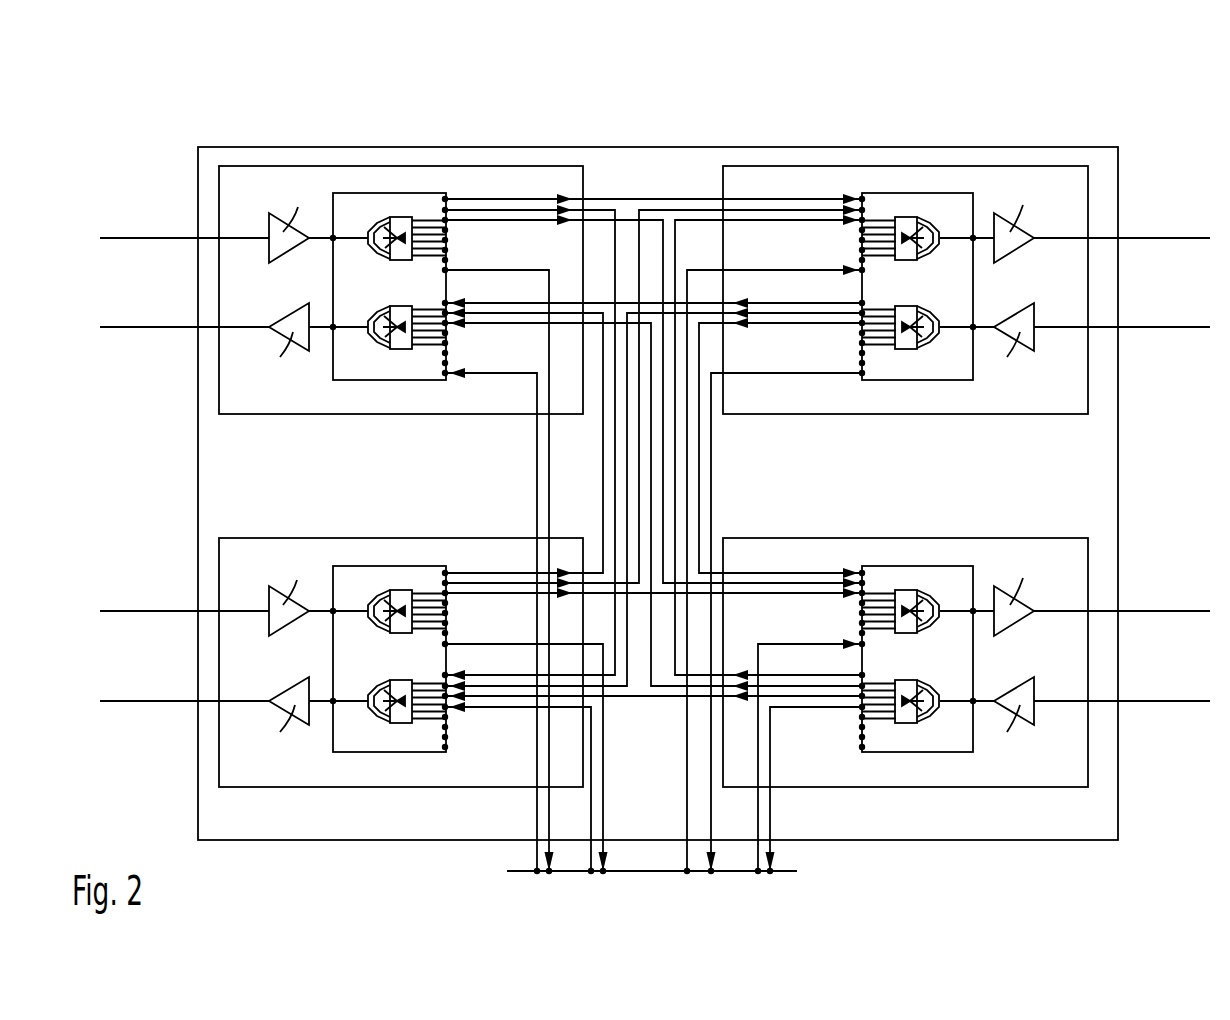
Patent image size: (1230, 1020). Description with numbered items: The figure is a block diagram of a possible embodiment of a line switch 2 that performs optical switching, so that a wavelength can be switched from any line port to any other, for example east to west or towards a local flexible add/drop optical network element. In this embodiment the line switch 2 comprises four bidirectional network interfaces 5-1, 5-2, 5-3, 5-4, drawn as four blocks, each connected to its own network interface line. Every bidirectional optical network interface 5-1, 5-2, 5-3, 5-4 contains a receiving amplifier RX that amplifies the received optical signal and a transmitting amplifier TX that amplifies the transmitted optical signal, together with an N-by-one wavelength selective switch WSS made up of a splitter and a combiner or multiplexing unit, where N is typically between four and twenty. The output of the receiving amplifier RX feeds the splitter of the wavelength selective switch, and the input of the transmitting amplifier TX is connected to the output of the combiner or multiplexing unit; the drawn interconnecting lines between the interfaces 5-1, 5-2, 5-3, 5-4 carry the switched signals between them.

The line switch 2 is at (653, 162).
The bidirectional network interface 5-1 is at (258, 576).
The bidirectional network interface 5-2 is at (258, 202).
The bidirectional network interface 5-3 is at (1080, 204).
The bidirectional network interface 5-4 is at (1080, 576).